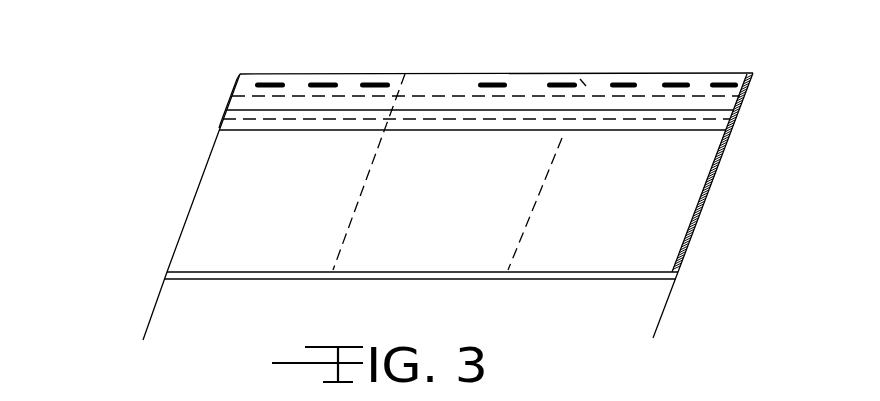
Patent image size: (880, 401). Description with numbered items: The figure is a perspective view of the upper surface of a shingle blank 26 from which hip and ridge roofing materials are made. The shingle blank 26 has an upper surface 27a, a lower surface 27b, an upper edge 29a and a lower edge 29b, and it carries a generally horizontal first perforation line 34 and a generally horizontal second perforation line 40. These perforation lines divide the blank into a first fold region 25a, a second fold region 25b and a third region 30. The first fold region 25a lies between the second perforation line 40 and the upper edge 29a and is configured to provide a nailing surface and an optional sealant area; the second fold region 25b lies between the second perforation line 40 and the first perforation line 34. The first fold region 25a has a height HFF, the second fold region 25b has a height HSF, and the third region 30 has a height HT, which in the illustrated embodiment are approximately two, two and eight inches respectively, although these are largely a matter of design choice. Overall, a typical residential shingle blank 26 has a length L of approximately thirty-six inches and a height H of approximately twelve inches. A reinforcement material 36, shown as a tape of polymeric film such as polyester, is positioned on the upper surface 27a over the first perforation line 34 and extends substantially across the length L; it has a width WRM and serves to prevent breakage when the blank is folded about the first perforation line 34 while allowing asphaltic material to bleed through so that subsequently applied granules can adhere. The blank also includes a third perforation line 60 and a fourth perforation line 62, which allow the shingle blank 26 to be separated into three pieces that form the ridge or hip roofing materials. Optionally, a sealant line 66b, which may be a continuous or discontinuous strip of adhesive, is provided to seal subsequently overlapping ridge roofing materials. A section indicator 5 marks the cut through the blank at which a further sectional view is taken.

The first fold region 25a is at (232, 85).
The second fold region 25b is at (219, 106).
The shingle blank 26 is at (267, 73).
The upper edge 29a is at (350, 73).
The lower edge 29b is at (378, 280).
The upper surface 27a is at (267, 222).
The lower surface 27b is at (208, 282).
The second perforation line 40 is at (530, 93).
The first perforation line 34 is at (562, 138).
The reinforcement material 36 is at (690, 108).
The sealant line 66b is at (627, 82).
The third region 30 is at (693, 281).
The third perforation line 60 is at (363, 187).
The fourth perforation line 62 is at (527, 228).
The section line 5 is at (458, 101).
The height of first fold region HFF is at (207, 74).
The height of second fold region HSF is at (195, 118).
The height of third region HT is at (148, 271).
The height H is at (173, 76).
The width of reinforcement material WRM is at (758, 105).
The length L is at (655, 327).